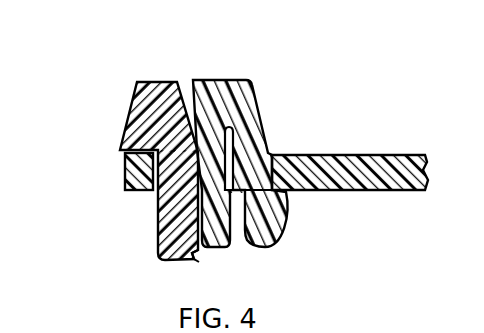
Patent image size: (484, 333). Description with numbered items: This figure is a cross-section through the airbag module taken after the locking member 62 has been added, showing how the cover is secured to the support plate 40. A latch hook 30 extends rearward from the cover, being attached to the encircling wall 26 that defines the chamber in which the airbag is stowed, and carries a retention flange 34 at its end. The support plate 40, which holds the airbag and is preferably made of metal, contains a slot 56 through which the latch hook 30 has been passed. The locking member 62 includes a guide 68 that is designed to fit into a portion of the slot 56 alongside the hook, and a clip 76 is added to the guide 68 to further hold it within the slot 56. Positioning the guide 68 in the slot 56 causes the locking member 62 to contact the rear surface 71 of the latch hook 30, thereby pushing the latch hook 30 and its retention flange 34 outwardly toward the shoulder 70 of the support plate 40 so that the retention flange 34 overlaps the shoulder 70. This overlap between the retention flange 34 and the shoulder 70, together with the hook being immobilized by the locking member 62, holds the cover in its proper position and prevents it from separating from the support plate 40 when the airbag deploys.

The encircling wall 26 is at (200, 257).
The latch hook 30 is at (174, 215).
The retention flange 34 is at (140, 121).
The support plate 40 is at (353, 175).
The slot 56 is at (266, 154).
The locking member 62 is at (218, 76).
The guide 68 is at (245, 113).
The shoulder 70 is at (128, 167).
The rear surface 71 is at (230, 243).
The clip 76 is at (270, 208).